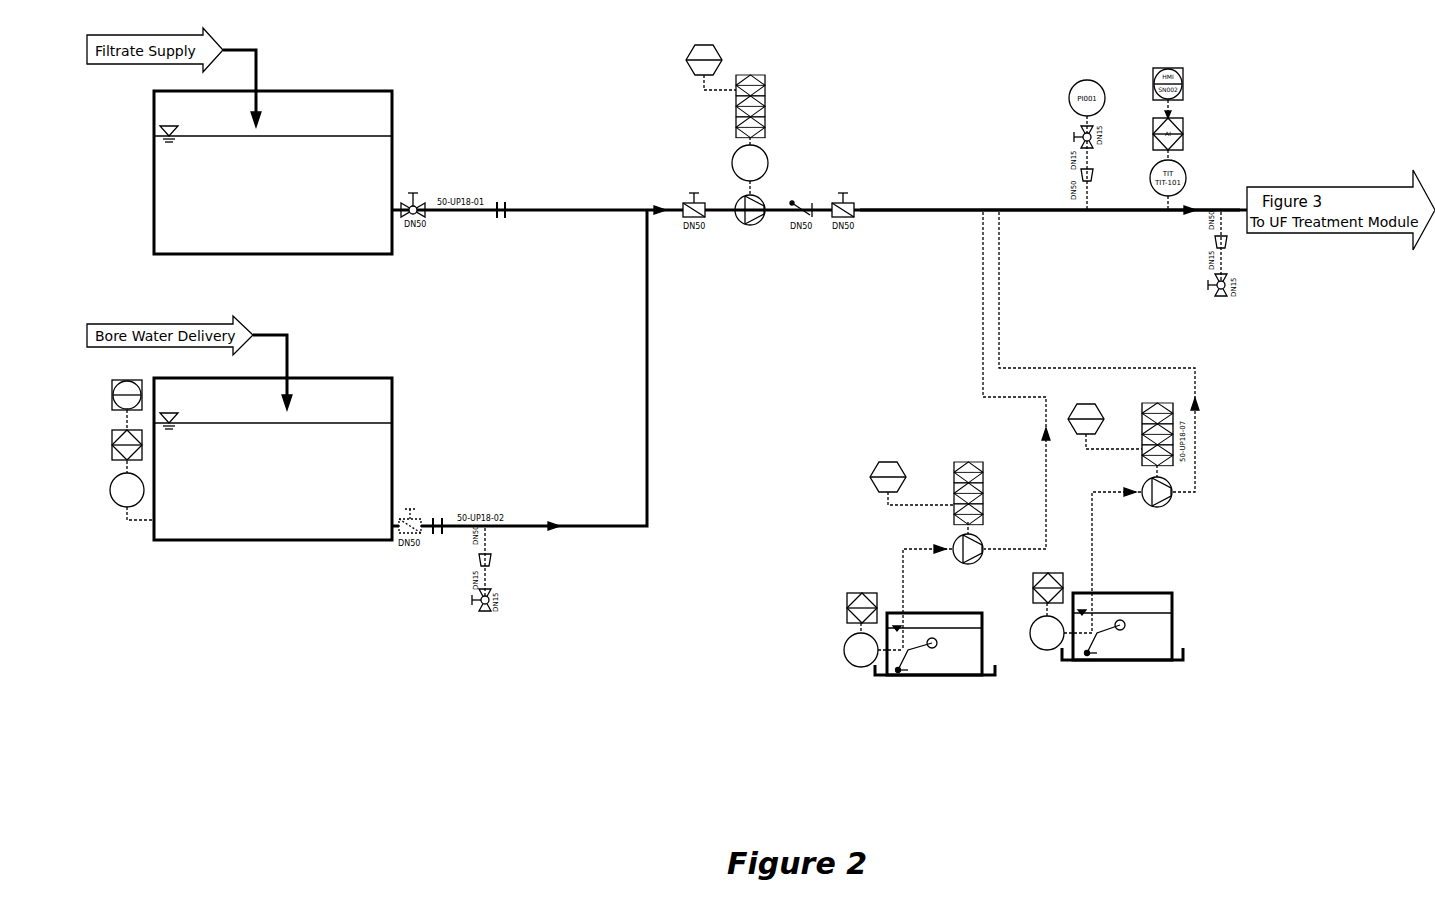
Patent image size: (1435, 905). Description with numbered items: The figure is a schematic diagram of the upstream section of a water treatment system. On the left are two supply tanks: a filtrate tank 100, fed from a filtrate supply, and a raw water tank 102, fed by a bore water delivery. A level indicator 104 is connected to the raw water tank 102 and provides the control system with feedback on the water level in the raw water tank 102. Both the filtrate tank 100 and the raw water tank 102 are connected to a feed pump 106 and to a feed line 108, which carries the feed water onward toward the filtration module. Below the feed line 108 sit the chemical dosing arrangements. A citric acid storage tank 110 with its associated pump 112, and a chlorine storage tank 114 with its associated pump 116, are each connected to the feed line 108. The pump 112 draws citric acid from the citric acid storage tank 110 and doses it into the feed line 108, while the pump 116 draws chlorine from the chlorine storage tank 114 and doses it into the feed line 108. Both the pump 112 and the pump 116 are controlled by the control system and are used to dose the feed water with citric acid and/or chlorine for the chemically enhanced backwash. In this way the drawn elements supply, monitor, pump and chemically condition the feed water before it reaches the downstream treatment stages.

The filtrate tank 100 is at (395, 159).
The raw water tank 102 is at (395, 446).
The level indicator 104 is at (113, 500).
The feed pump 106 is at (760, 199).
The feed line 108 is at (1032, 210).
The citric acid storage tank 110 is at (876, 670).
The citric acid pump 112 is at (957, 541).
The chlorine storage tank 114 is at (1173, 633).
The chlorine pump 116 is at (1171, 486).